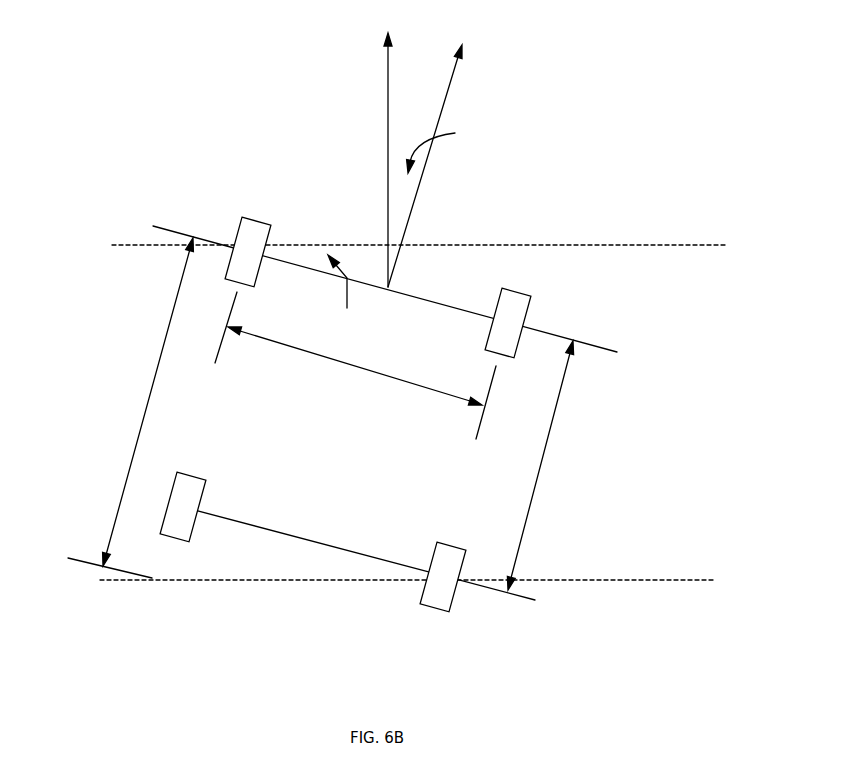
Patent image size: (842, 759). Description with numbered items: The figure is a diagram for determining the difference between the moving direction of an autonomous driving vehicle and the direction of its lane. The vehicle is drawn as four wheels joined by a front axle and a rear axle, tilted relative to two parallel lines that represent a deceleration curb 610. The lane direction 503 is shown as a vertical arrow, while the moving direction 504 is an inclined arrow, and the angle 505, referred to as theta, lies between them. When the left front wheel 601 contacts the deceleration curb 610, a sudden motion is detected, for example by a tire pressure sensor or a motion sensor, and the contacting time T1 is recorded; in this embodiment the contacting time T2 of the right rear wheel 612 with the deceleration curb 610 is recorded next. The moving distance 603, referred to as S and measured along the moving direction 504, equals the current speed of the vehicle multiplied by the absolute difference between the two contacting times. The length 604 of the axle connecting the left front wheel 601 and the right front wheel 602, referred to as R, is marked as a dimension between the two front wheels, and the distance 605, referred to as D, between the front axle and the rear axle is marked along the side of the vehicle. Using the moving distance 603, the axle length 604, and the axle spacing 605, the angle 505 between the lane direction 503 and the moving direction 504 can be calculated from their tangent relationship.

The lane direction 503 is at (388, 97).
The moving direction 504 is at (450, 92).
The angle 505 is at (419, 232).
The left front wheel 601 is at (238, 232).
The right front wheel 602 is at (529, 308).
The moving distance 603 is at (150, 354).
The length of axle 604 is at (355, 381).
The distance between the front axle and the rear axle 605 is at (562, 461).
The deceleration curb 610 is at (713, 243).
The right rear wheel 612 is at (452, 603).